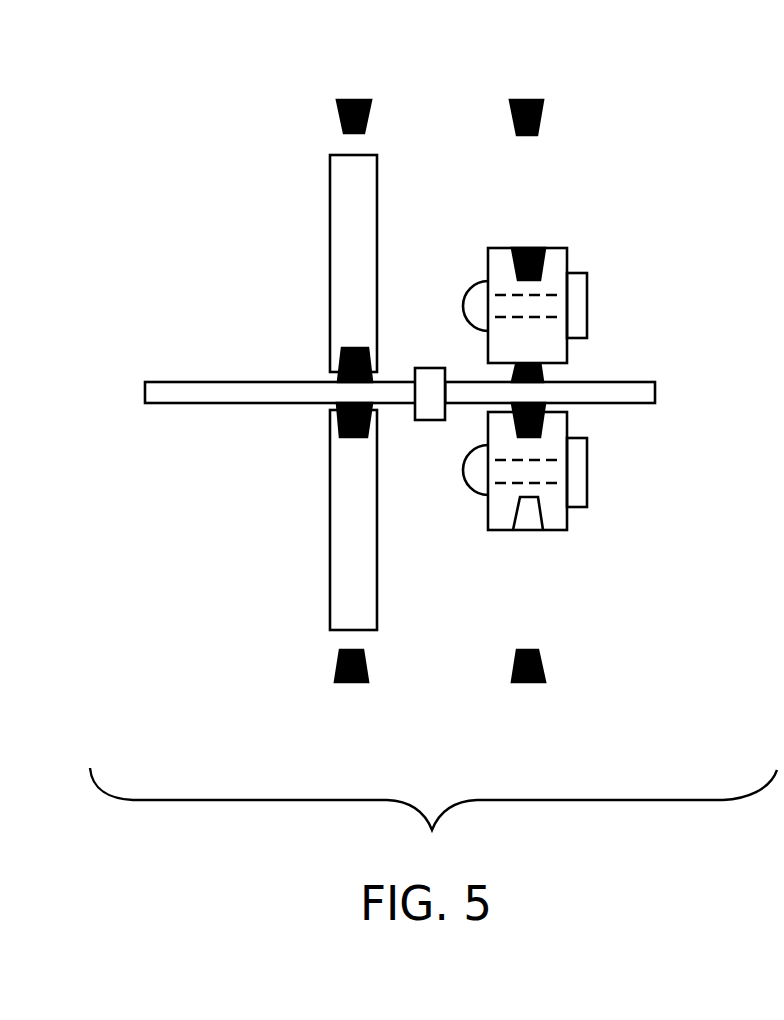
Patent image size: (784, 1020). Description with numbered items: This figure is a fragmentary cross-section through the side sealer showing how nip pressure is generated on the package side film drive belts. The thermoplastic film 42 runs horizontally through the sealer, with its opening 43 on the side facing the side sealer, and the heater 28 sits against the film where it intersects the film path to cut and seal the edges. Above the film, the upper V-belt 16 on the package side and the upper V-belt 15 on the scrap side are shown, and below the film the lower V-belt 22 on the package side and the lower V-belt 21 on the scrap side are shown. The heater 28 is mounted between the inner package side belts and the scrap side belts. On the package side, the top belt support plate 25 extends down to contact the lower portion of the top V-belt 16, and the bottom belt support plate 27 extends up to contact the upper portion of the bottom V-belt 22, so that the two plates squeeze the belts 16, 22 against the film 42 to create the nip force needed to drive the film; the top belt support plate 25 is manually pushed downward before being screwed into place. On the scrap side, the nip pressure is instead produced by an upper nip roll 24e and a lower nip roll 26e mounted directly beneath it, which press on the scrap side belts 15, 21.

The upper V-belt 15 is at (540, 112).
The upper V-belt 16 is at (338, 116).
The lower V-belt 21 is at (545, 422).
The lower V-belt 22 is at (337, 420).
The upper nip roll 24e is at (571, 260).
The top belt support plate 25 is at (336, 236).
The lower nip roll 26e is at (567, 515).
The bottom belt support plate 27 is at (345, 528).
The heater 28 is at (430, 368).
The thermoplastic film 42 is at (223, 382).
The opening 43 is at (635, 382).